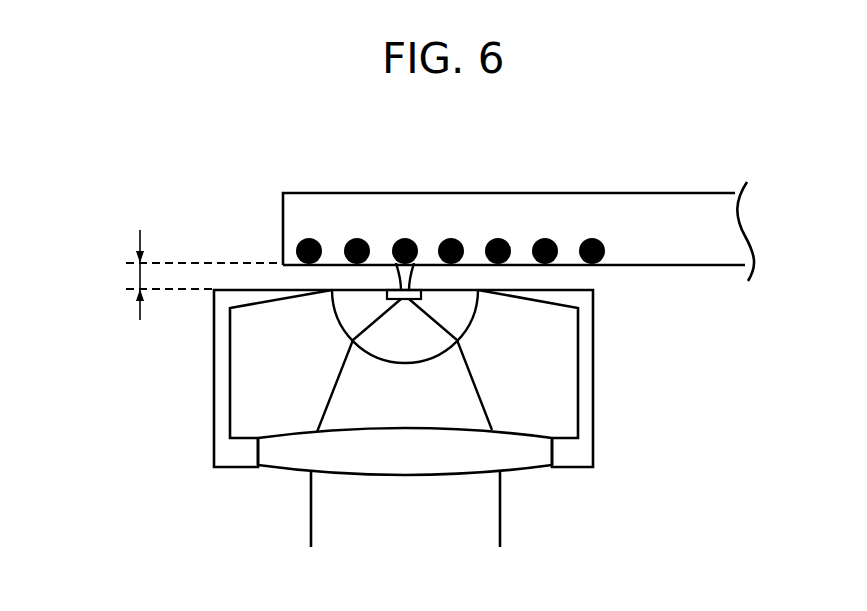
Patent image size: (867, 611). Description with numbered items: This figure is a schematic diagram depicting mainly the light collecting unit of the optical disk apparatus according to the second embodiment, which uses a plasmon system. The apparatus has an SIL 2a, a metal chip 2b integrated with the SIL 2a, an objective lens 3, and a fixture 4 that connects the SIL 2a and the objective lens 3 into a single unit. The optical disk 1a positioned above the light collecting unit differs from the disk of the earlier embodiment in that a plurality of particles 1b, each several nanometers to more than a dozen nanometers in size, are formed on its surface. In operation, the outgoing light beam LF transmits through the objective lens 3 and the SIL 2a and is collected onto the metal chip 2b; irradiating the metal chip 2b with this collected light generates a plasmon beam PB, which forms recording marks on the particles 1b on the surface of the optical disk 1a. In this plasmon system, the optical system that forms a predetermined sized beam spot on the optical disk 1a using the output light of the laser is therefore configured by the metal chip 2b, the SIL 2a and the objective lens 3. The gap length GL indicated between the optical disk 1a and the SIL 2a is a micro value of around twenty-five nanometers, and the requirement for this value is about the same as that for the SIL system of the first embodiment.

The optical disk 1a is at (648, 193).
The particles 1b is at (352, 236).
The gap length GL is at (140, 277).
The plasmon beam PB is at (410, 275).
The SIL 2a is at (472, 312).
The metal chip 2b is at (387, 297).
The light beam LF is at (445, 392).
The fixture 4 is at (214, 403).
The objective lens 3 is at (290, 472).